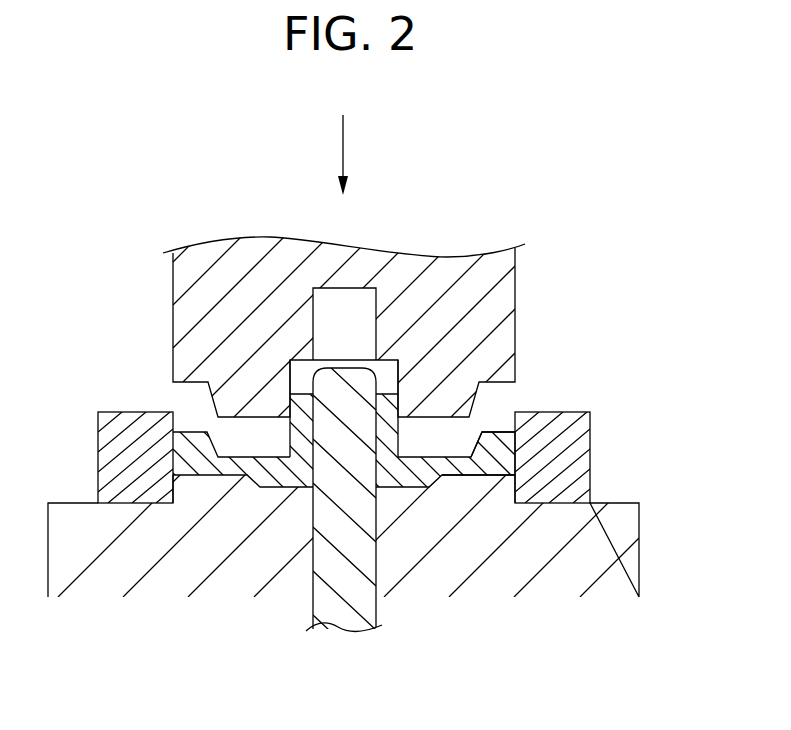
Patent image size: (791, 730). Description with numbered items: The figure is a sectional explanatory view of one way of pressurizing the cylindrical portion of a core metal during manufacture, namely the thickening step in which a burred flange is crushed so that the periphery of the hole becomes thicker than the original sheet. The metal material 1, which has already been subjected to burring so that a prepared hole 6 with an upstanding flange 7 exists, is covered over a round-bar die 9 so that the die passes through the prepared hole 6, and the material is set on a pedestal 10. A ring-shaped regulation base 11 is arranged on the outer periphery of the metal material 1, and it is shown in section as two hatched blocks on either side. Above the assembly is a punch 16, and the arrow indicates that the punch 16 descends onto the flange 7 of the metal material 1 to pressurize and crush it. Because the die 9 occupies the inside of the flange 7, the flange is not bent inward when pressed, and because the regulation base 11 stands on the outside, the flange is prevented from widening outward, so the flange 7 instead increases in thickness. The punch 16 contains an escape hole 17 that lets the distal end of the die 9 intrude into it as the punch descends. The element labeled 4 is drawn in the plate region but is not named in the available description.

The metal material 1 is at (443, 476).
The collar portion of plate 4 is at (498, 445).
The prepared hole 6 is at (290, 428).
The flange 7 is at (385, 418).
The round-bar die 9 is at (341, 611).
The pedestal 10 is at (622, 560).
The regulation base 11 is at (563, 453).
The punch 16 is at (503, 338).
The escape hole 17 is at (352, 304).